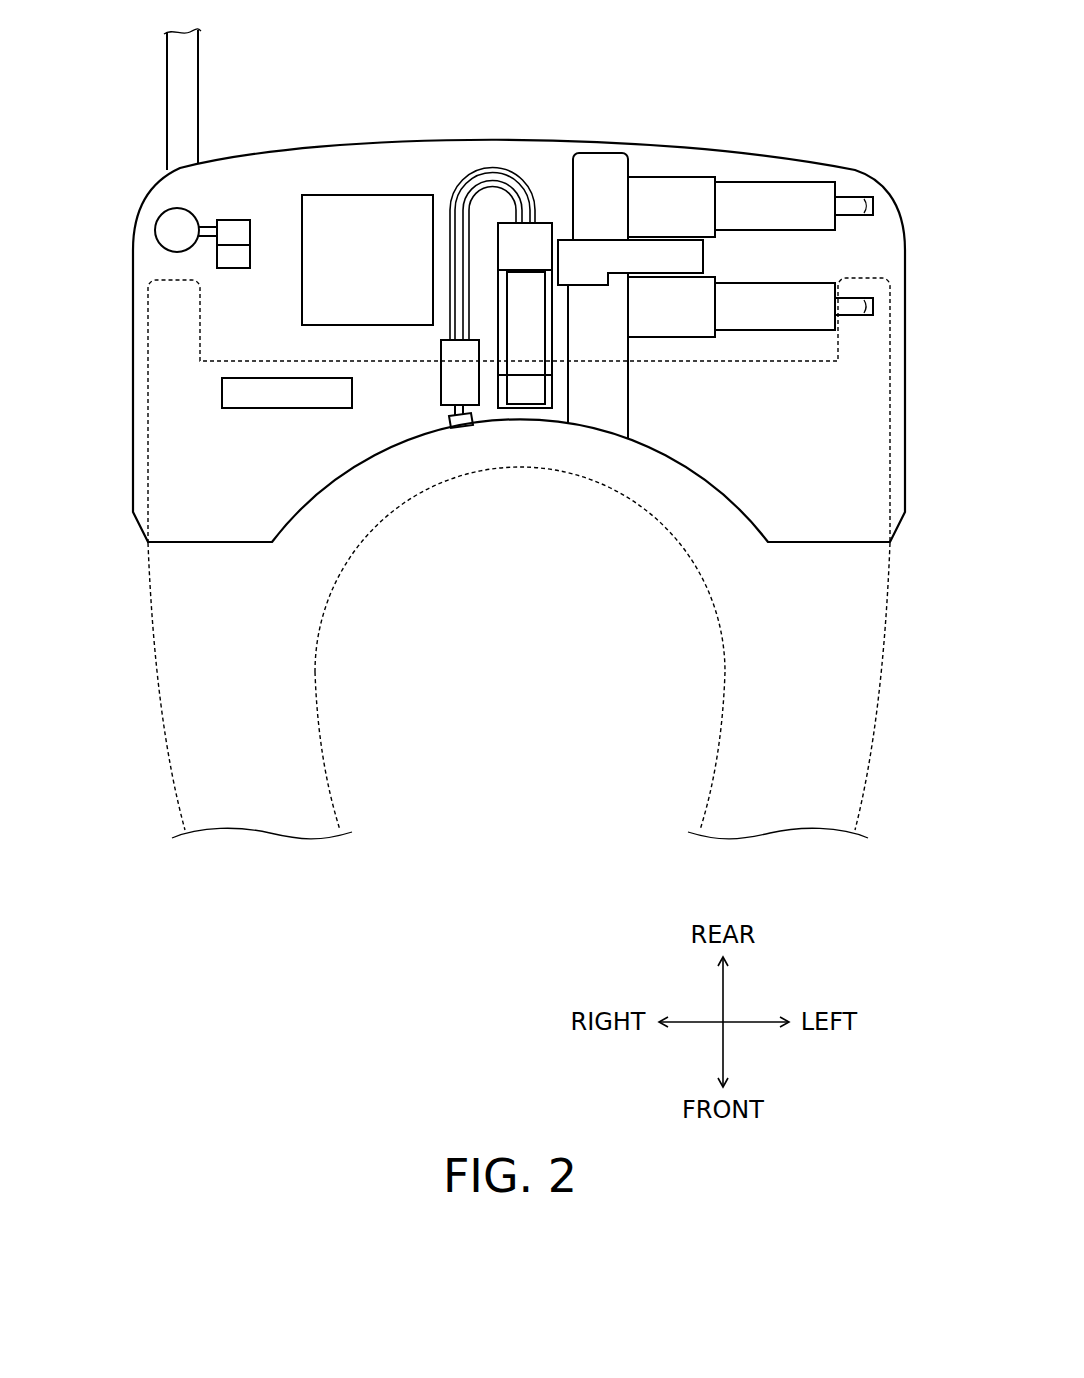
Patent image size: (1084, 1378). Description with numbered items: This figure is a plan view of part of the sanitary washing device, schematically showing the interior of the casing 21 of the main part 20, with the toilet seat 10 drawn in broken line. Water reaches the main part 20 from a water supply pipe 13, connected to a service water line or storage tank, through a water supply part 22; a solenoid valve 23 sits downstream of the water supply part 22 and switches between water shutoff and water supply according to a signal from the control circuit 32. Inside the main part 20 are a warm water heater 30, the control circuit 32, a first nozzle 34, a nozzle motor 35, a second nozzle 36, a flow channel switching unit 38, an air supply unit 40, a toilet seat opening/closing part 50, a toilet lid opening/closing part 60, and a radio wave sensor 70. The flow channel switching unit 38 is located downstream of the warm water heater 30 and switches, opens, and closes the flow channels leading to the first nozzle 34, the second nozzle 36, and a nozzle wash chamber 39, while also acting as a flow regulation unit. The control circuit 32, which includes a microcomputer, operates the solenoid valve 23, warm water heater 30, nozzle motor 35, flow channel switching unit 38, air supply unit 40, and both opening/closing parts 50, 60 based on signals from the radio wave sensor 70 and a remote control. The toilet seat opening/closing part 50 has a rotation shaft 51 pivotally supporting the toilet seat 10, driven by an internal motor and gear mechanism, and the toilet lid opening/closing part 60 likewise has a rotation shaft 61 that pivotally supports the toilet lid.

The toilet seat 10 is at (880, 662).
The water supply pipe 13 is at (178, 58).
The main part 20 is at (110, 244).
The casing 21 is at (307, 145).
The water supply part 22 is at (168, 223).
The solenoid valve 23 is at (232, 230).
The warm water heater 30 is at (227, 392).
The control circuit 32 is at (363, 220).
The first nozzle 34 is at (523, 393).
The nozzle motor 35 is at (540, 233).
The second nozzle 36 is at (460, 428).
The flow channel switching unit 38 is at (450, 378).
The nozzle wash chamber 39 is at (553, 390).
The air supply unit 40 is at (598, 168).
The toilet seat opening/closing part 50 is at (795, 295).
The rotation shaft 51 is at (873, 305).
The toilet lid opening/closing part 60 is at (758, 192).
The rotation shaft 61 is at (857, 203).
The radio wave sensor 70 is at (592, 265).